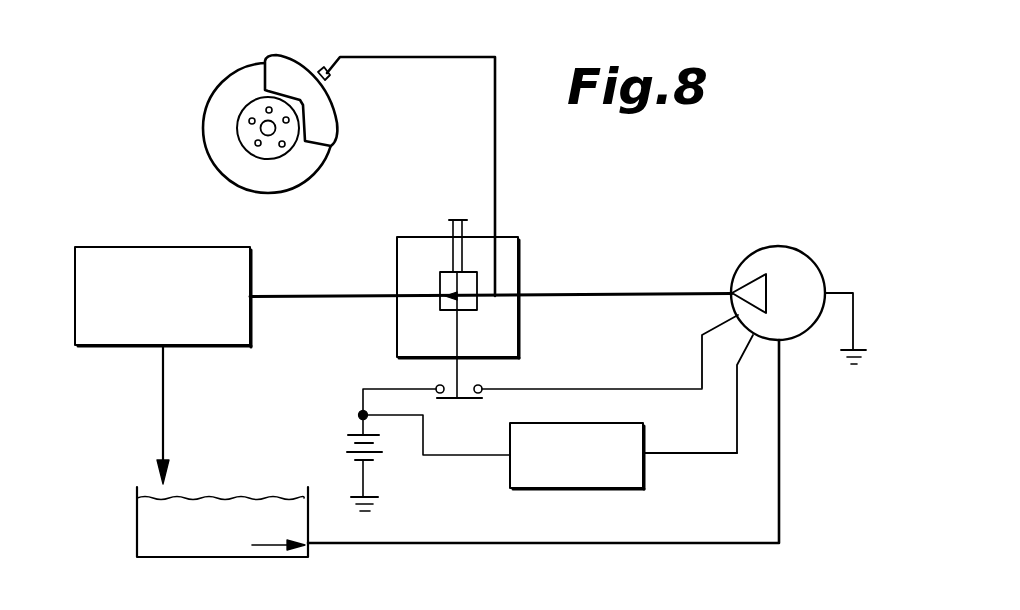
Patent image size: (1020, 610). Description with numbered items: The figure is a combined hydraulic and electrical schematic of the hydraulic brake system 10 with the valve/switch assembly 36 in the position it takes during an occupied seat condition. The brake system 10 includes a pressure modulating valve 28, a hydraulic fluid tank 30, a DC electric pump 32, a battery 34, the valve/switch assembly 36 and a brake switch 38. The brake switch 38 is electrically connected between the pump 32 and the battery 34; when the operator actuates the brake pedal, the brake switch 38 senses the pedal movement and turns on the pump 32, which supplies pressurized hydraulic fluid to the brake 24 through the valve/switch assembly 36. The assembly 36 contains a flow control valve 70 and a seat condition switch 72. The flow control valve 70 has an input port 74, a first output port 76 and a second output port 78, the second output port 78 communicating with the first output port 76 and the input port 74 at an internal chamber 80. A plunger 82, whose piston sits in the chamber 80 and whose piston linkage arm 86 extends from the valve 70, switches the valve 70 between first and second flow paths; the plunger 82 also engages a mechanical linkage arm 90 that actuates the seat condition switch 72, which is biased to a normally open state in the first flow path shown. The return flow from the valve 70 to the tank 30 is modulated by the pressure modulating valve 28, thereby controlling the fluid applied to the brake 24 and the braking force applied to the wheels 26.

The hydraulic brake system 10 is at (650, 248).
The brake 24 is at (297, 68).
The wheels 26 is at (221, 106).
The pressure modulating valve 28 is at (112, 247).
The hydraulic fluid tank 30 is at (137, 527).
The electric pump 32 is at (793, 247).
The battery 34 is at (362, 433).
The valve/switch assembly 36 is at (464, 287).
The brake switch 38 is at (538, 490).
The flow control valve 70 is at (397, 267).
The seat condition switch 72 is at (436, 386).
The input port 74 is at (518, 296).
The first output port 76 is at (497, 236).
The second output port 78 is at (397, 298).
The internal chamber 80 is at (467, 272).
The plunger 82 is at (473, 307).
The piston linkage arm 86 is at (453, 232).
The mechanical linkage arm 90 is at (470, 383).